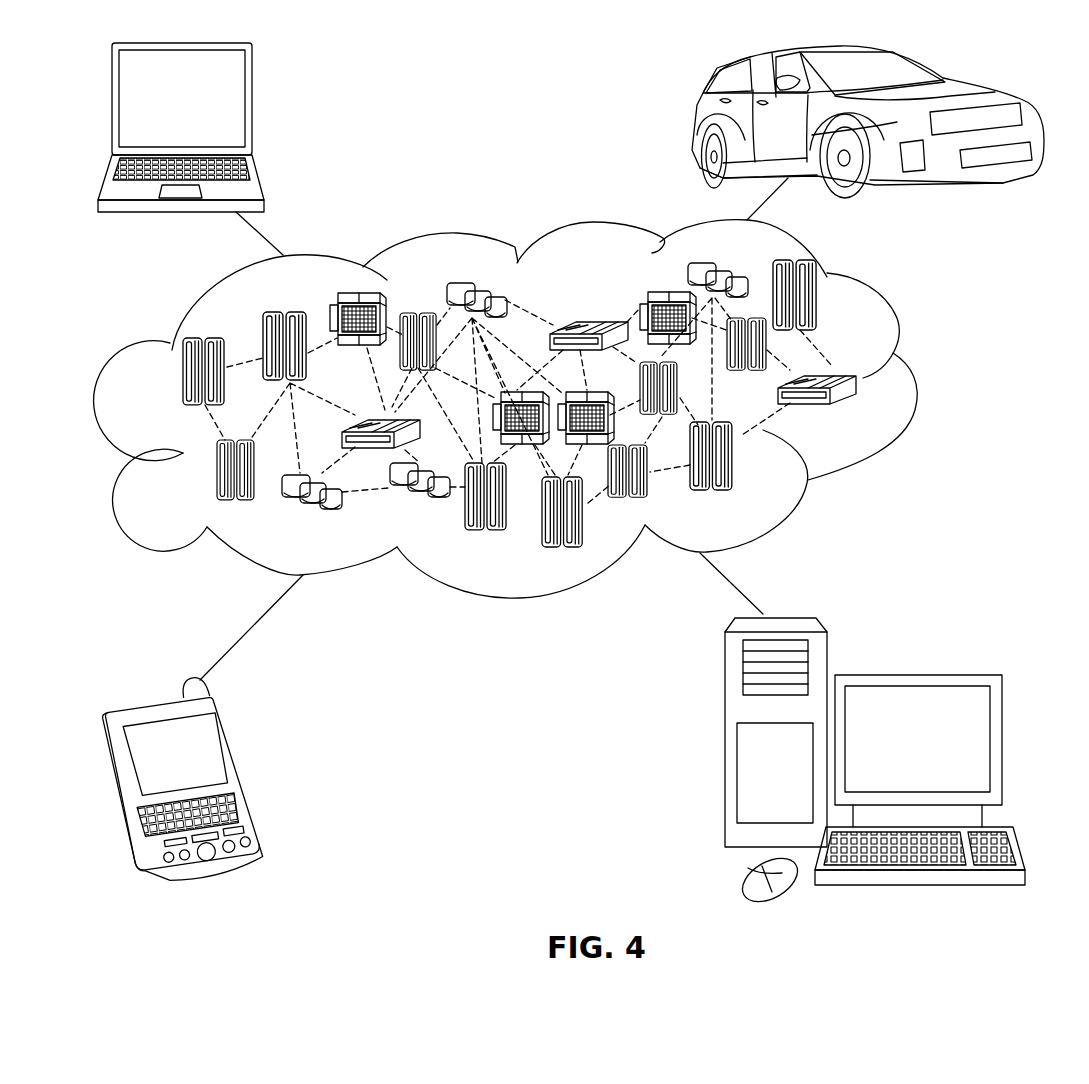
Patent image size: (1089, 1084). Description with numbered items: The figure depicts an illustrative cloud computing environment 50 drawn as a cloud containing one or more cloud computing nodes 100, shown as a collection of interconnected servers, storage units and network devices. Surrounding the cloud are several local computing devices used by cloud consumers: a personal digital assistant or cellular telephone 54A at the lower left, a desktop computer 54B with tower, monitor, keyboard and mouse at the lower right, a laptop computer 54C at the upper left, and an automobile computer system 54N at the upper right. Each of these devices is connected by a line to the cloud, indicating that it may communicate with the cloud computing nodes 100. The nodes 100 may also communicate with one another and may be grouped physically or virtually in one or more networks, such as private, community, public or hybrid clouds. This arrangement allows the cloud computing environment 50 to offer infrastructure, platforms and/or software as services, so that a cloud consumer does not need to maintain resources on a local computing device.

The cloud computing environment 50 is at (538, 409).
The cloud computing nodes 100 is at (857, 411).
The personal digital assistant (PDA) or cellular telephone 54A is at (245, 768).
The desktop computer 54B is at (915, 672).
The laptop computer 54C is at (253, 105).
The automobile computer system 54N is at (695, 122).